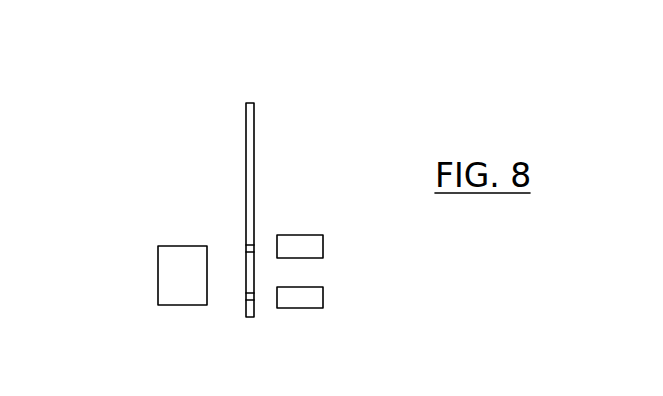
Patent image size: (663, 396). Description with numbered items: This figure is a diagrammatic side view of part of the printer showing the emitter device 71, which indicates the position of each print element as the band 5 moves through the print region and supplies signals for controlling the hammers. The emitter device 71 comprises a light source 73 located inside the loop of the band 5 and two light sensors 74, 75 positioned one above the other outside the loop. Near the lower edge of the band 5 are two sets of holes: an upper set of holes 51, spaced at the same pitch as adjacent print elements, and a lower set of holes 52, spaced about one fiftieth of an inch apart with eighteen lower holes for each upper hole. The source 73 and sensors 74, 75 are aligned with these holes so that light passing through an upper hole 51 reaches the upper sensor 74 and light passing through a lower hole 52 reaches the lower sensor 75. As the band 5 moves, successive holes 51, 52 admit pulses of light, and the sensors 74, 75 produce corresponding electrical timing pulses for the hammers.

The band 5 is at (254, 134).
The holes of upper set 51 is at (254, 247).
The holes of lower set 52 is at (254, 296).
The emitter device 71 is at (121, 224).
The light source 73 is at (166, 277).
The upper light sensor 74 is at (323, 248).
The lower light sensor 75 is at (323, 294).